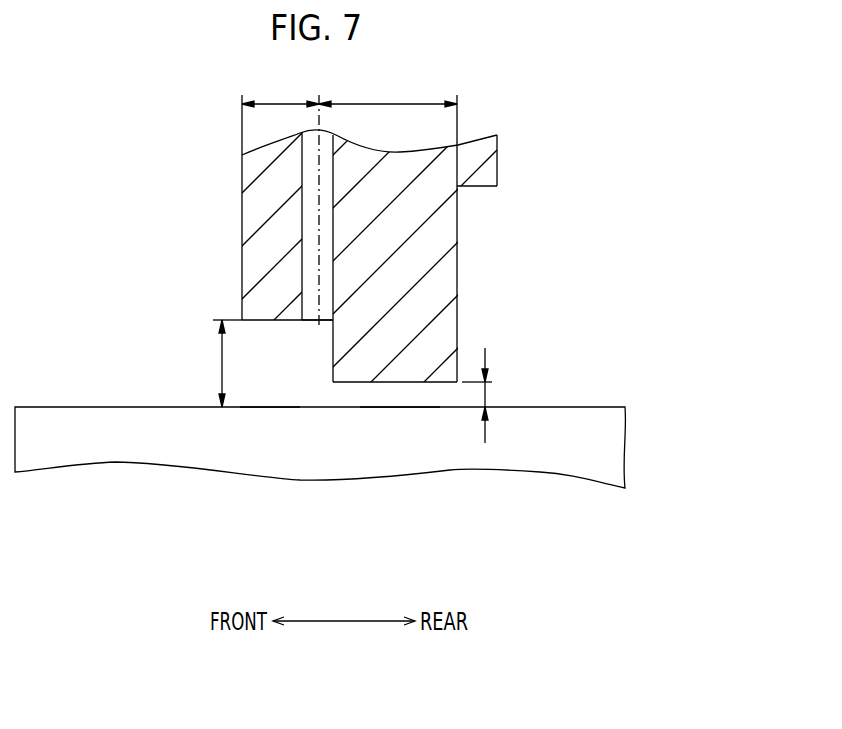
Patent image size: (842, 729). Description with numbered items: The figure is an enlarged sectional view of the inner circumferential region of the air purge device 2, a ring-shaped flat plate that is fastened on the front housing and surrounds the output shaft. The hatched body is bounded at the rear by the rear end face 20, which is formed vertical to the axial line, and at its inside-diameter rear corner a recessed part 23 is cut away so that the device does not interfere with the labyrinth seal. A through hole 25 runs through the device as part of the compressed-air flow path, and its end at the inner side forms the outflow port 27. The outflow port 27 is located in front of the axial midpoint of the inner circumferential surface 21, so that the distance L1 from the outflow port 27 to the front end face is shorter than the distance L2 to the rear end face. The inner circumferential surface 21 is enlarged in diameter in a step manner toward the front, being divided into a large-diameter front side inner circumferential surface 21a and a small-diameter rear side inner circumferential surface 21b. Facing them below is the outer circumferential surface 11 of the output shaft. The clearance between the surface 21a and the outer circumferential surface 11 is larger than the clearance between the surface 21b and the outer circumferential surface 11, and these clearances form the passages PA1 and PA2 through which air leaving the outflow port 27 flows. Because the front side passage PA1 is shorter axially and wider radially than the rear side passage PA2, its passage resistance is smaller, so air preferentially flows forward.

The air purge device 2 is at (527, 105).
The outer circumferential surface 11 is at (583, 407).
The rear end face 20 is at (497, 145).
The inner circumferential surface 21 is at (387, 459).
The front side inner circumferential surface 21a is at (280, 320).
The rear side inner circumferential surface 21b is at (400, 383).
The recessed part 23 is at (457, 270).
The through hole 25 is at (310, 142).
The outflow port 27 is at (310, 305).
The front side passage PA1 is at (265, 370).
The rear side passage PA2 is at (412, 397).
The distance from outflow port to front end face L1 is at (280, 114).
The distance from outflow port to rear end face L2 is at (388, 109).